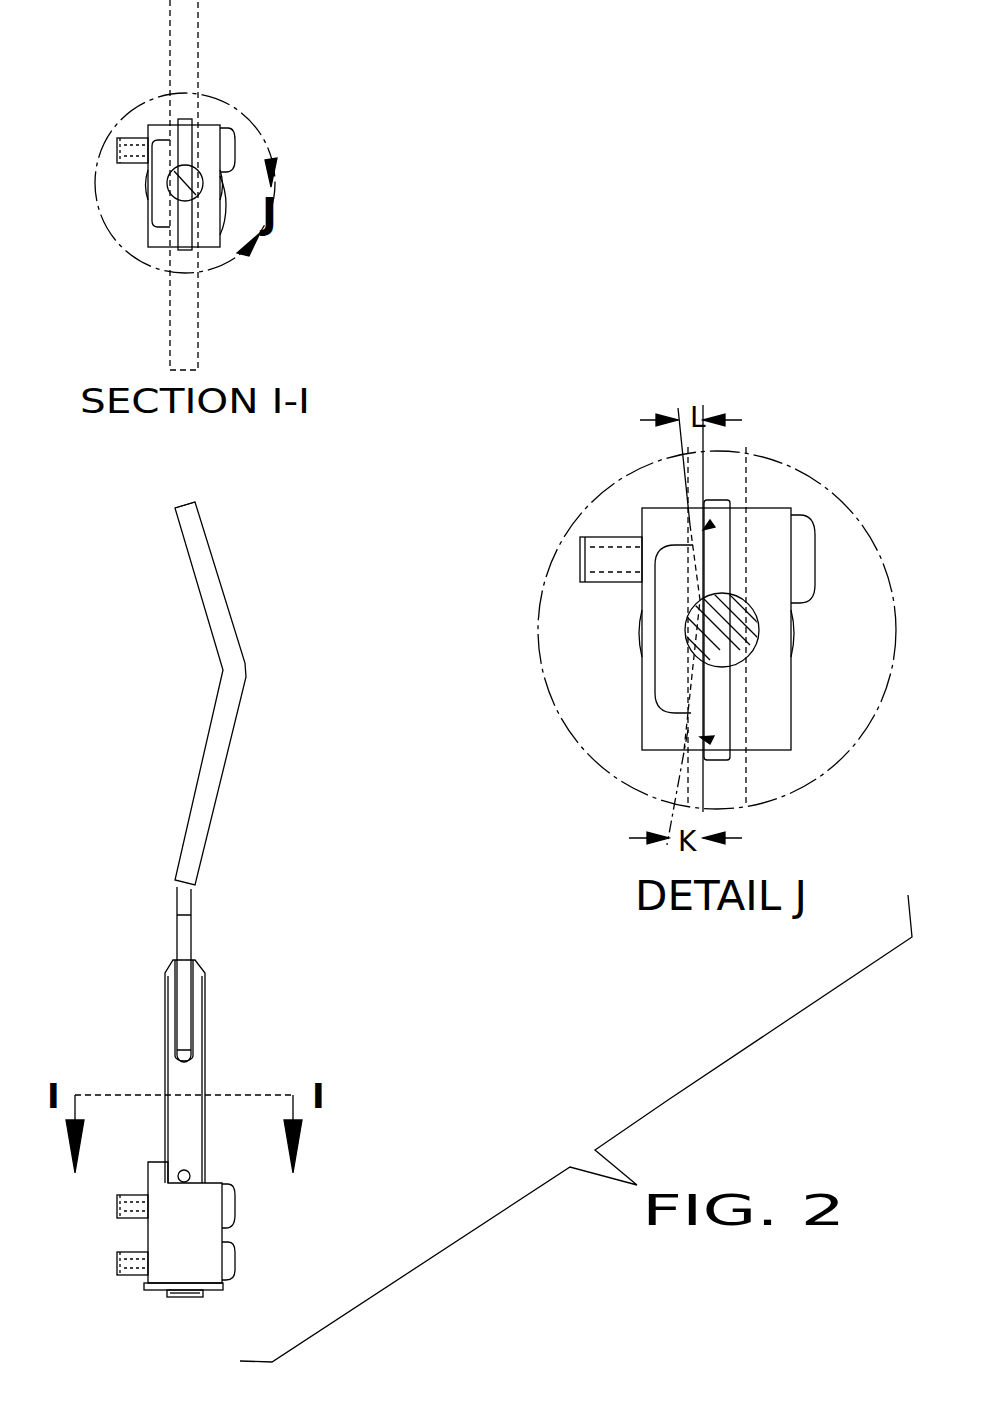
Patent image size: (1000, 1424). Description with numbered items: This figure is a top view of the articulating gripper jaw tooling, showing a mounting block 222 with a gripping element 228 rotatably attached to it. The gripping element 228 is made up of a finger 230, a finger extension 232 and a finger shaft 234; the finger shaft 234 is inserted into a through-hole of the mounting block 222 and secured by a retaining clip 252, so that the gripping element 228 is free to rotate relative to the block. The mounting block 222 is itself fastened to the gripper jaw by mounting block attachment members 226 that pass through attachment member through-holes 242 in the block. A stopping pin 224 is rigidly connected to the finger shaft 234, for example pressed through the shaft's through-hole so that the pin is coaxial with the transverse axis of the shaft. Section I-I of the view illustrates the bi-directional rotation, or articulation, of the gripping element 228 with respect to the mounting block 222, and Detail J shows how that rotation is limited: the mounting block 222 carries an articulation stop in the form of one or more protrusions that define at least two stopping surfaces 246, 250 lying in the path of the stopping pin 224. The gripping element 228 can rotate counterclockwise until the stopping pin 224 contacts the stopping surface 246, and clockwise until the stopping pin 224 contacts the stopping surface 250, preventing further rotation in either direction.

The mounting block 222 is at (173, 1237).
The stopping pin 224 is at (187, 1168).
The mounting block attachment member 226 is at (230, 1262).
The gripping element 228 is at (230, 653).
The finger 230 is at (182, 507).
The finger extension 232 is at (187, 943).
The finger shaft 234 is at (192, 1080).
The attachment member through-hole 242 is at (147, 1193).
The stopping surface 246 is at (703, 530).
The stopping surface 250 is at (700, 737).
The retaining clip 252 is at (210, 1292).